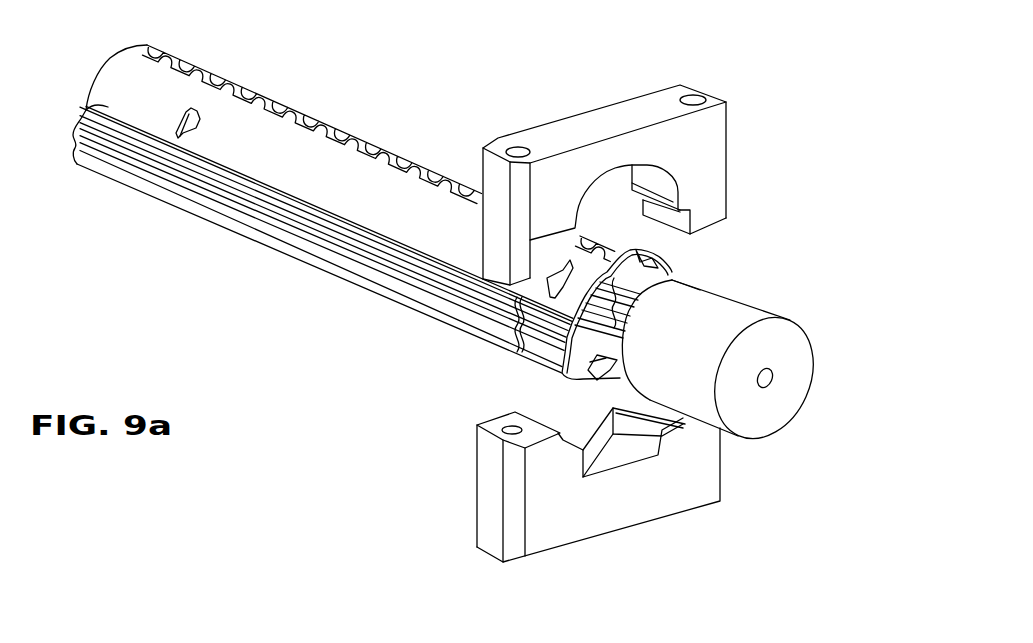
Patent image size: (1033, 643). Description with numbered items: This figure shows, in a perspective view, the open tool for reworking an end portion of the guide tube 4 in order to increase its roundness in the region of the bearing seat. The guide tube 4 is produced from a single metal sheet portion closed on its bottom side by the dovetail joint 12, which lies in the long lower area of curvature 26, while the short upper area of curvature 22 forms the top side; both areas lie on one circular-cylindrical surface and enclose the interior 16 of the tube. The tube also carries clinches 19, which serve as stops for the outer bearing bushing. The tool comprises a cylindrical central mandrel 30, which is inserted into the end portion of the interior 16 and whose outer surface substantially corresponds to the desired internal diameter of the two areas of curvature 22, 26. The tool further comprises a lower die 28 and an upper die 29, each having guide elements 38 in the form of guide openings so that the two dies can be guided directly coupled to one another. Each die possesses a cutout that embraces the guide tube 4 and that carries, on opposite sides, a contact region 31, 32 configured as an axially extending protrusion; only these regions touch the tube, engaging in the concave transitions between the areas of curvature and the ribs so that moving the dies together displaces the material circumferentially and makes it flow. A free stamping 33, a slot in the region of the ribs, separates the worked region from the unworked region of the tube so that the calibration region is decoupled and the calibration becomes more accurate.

The guide tube 4 is at (293, 160).
The dovetail joint 12 is at (370, 137).
The clinch 19 is at (181, 110).
The interior 16 is at (587, 337).
The upper area of curvature 22 is at (602, 380).
The lower area of curvature 26 is at (668, 267).
The lower die 28 is at (711, 157).
The upper die 29 is at (667, 495).
The central mandrel 30 is at (793, 356).
The contact region 31 is at (657, 203).
The contact region 32 is at (569, 450).
The free stamping 33 is at (522, 337).
The guide element 38 is at (514, 147).